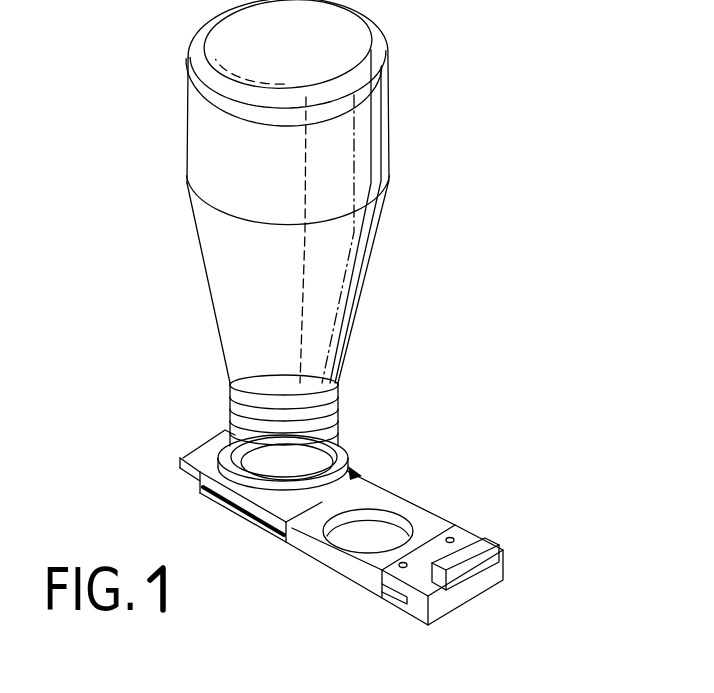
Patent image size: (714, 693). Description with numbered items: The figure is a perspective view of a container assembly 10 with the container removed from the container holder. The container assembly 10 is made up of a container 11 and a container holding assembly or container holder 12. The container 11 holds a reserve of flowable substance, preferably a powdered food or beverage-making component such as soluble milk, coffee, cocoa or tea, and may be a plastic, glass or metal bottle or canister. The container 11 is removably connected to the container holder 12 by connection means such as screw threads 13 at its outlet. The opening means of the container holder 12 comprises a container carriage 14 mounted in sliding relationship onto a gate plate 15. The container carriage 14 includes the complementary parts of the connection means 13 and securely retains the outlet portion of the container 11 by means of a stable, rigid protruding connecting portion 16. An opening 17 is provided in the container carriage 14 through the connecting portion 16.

The container assembly 10 is at (458, 207).
The container 11 is at (185, 137).
The container holder 12 is at (417, 638).
The screw threads 13 is at (336, 436).
The container carriage 14 is at (200, 480).
The gate plate 15 is at (429, 513).
The connecting portion 16 is at (217, 470).
The opening 17 is at (305, 468).